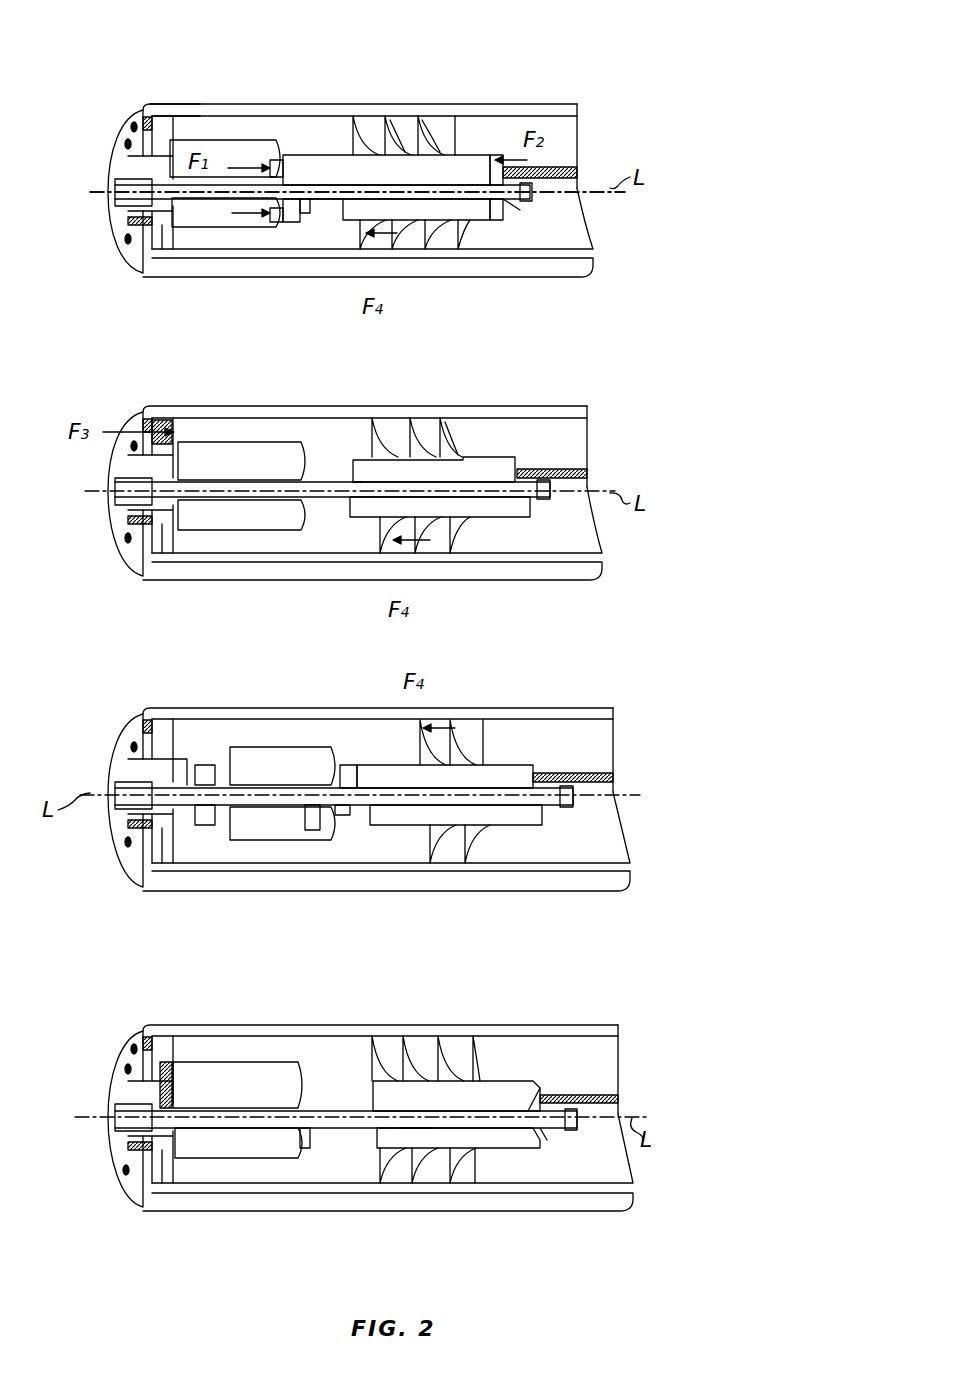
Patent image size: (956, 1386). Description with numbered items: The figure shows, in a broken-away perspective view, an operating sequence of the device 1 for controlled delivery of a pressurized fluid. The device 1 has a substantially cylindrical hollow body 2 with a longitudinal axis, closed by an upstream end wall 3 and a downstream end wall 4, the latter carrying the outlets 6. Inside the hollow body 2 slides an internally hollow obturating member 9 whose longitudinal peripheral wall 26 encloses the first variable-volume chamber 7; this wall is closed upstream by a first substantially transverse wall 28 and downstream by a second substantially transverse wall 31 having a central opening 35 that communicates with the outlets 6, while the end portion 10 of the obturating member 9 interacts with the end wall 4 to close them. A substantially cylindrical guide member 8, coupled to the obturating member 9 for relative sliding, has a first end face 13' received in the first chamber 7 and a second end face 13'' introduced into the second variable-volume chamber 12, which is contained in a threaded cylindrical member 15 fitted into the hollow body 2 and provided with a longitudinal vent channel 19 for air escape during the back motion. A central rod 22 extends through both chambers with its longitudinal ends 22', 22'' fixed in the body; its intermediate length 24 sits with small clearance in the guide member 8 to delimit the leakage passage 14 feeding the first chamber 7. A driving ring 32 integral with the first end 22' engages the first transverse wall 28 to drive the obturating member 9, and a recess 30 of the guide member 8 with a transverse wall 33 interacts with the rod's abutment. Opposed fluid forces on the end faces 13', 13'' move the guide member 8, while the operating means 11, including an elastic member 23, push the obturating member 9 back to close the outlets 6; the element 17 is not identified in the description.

The device for controlled delivery of a pressurized fluid 1 is at (723, 26).
The hollow body 2 is at (573, 102).
The end wall 3 is at (593, 253).
The end wall 4 is at (132, 260).
The outlets 6 is at (147, 120).
The first variable-volume chamber 7 is at (235, 152).
The guide member 8 is at (447, 210).
The obturating member 9 is at (323, 130).
The end portion 10 is at (163, 245).
The operating means 11 is at (413, 137).
The second variable-volume chamber 12 is at (498, 220).
The first end face 13' is at (227, 240).
The second end face 13'' is at (535, 111).
The passage 14 is at (358, 197).
The cylindrical member 15 is at (573, 230).
The seal 17 is at (523, 203).
The vent channel 19 is at (580, 175).
The central rod 22 is at (346, 650).
The first longitudinal end 22' is at (85, 655).
The second longitudinal end 22'' is at (605, 656).
The elastic member 23 is at (432, 127).
The intermediate length 24 is at (427, 193).
The longitudinal peripheral wall 26 is at (188, 110).
The first substantially transverse wall 28 is at (353, 118).
The recess 30 is at (307, 213).
The second substantially transverse wall 31 is at (135, 253).
The driving ring 32 is at (292, 222).
The transverse wall 33 is at (355, 770).
The central opening 35 is at (200, 450).